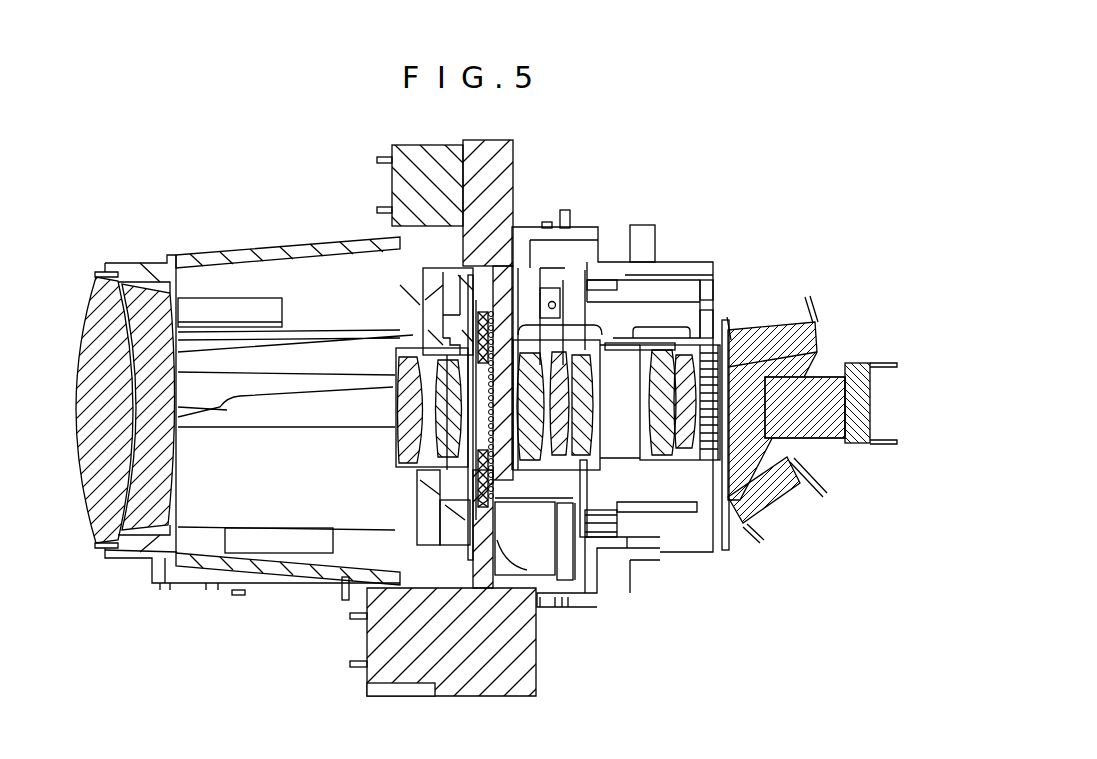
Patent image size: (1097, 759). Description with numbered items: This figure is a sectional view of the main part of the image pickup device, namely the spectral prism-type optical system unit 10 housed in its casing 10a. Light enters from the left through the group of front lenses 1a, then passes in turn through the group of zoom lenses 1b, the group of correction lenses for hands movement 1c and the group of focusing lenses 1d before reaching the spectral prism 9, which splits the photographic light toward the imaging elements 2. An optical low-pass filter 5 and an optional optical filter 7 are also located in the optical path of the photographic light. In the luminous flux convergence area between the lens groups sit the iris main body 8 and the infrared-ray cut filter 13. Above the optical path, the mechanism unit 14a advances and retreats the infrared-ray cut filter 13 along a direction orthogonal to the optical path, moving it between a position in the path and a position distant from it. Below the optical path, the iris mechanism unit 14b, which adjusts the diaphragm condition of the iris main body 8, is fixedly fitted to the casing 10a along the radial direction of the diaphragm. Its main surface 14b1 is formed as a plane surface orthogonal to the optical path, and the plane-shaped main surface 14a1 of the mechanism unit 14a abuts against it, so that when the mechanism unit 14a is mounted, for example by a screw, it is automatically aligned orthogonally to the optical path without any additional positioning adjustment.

The group of front lenses 1a is at (187, 248).
The casing 10a is at (246, 248).
The group of zoom lenses 1b is at (428, 330).
The mechanism unit 14a is at (483, 162).
The main surface 14a1 is at (471, 274).
The group of correction lenses for hands movement 1c is at (565, 340).
The group of focusing lenses 1d is at (662, 340).
The optical system unit 10 is at (768, 173).
The imaging elements 2 is at (843, 442).
The optical low-pass filter 5 is at (726, 490).
The spectral prism 9 is at (763, 513).
The iris main body 8 is at (478, 478).
The optional optical filter 7 is at (470, 522).
The infrared-ray cut filter 13 is at (540, 580).
The main surface 14b1 is at (510, 467).
The iris mechanism unit 14b is at (484, 657).